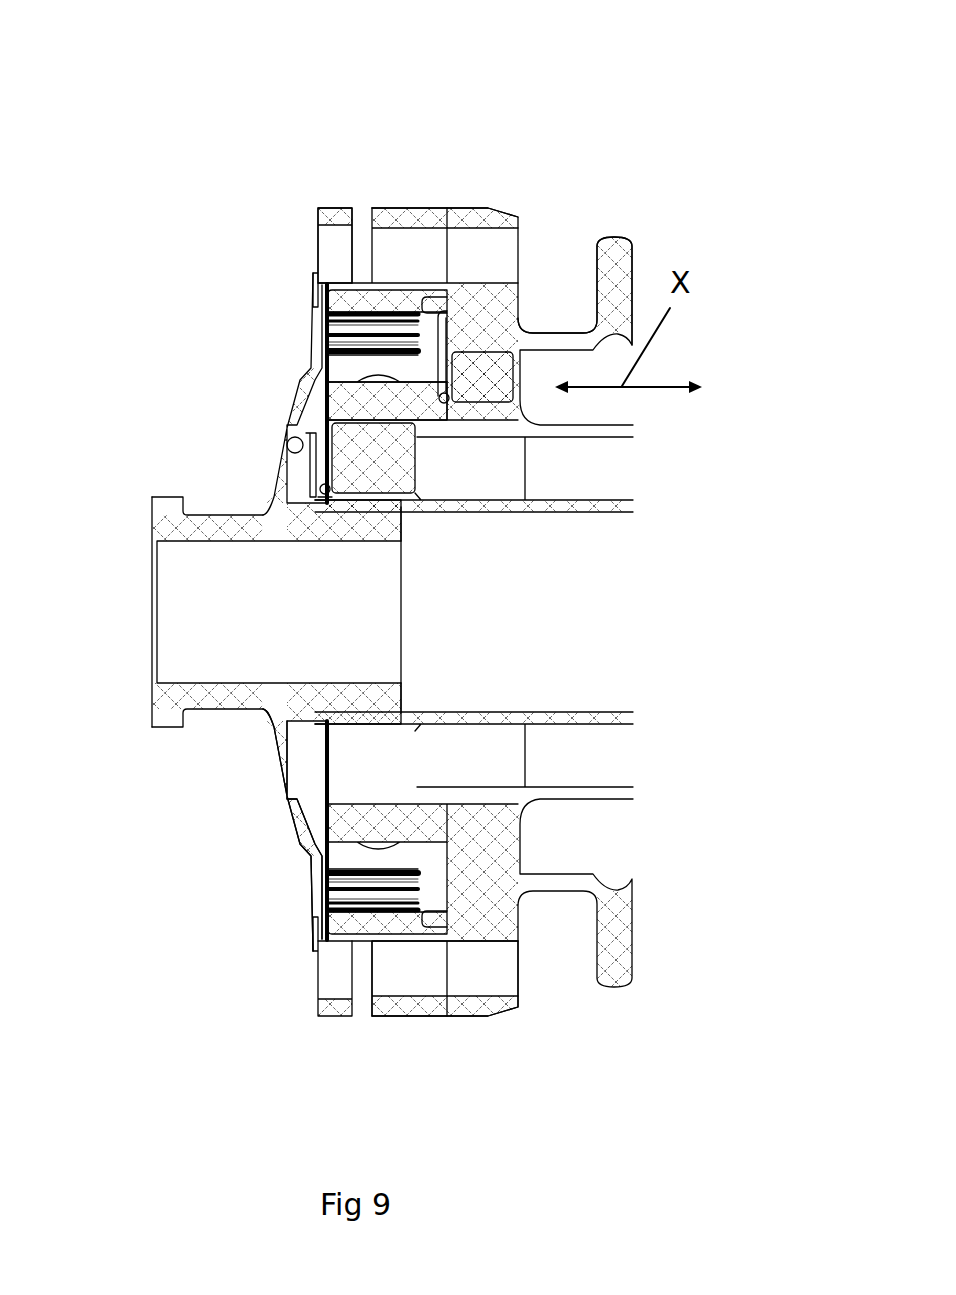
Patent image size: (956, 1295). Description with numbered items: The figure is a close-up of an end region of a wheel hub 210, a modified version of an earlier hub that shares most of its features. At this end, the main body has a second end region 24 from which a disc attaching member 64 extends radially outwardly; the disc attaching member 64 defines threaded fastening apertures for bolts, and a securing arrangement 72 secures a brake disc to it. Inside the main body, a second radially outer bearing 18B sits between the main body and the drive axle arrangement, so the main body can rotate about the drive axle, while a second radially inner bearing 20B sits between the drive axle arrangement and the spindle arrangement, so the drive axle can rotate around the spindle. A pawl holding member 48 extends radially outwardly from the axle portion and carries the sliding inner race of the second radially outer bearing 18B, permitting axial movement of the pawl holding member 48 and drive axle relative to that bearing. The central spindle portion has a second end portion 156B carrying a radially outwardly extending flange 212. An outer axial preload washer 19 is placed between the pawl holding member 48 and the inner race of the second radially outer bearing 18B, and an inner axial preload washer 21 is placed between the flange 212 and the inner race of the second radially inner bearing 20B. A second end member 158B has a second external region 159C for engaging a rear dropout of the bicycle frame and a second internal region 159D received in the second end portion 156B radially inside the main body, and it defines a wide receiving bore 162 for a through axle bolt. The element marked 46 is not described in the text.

The wheel hub 210 is at (516, 130).
The fastener 46 is at (331, 205).
The second radially outer bearing 18B is at (482, 372).
The second end region 24 is at (545, 333).
The pawl holding member 48 is at (348, 393).
The second radially inner bearing 20B is at (366, 461).
The second end member 158B is at (178, 498).
The radially outwardly extending flange 212 is at (318, 473).
The outer axial preload washer 19 is at (449, 404).
The inner axial preload washer 21 is at (317, 497).
The second internal region 159D is at (388, 528).
The second end portion 156B is at (400, 712).
The receiving bore 162 is at (218, 541).
The second external region 159C is at (238, 690).
The securing arrangement 72 is at (290, 847).
The disc attaching member 64 is at (503, 1021).